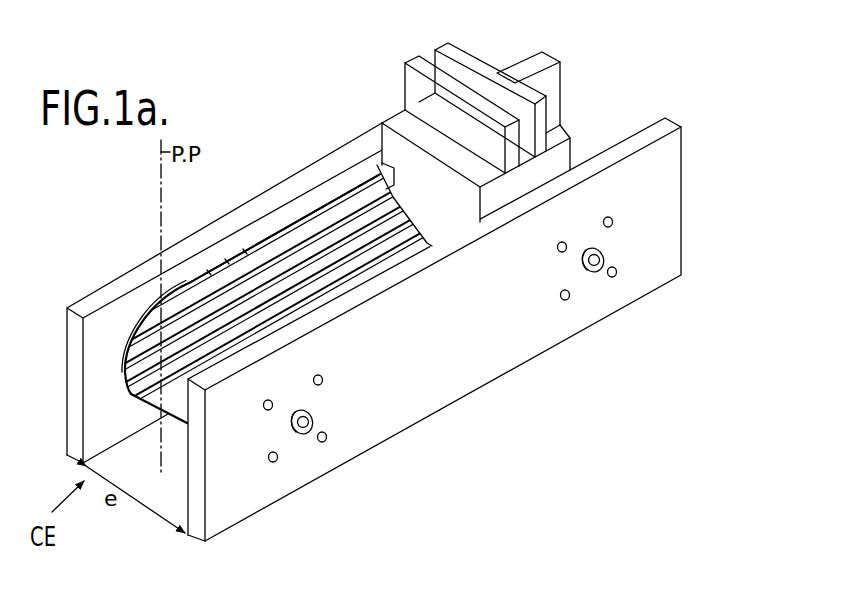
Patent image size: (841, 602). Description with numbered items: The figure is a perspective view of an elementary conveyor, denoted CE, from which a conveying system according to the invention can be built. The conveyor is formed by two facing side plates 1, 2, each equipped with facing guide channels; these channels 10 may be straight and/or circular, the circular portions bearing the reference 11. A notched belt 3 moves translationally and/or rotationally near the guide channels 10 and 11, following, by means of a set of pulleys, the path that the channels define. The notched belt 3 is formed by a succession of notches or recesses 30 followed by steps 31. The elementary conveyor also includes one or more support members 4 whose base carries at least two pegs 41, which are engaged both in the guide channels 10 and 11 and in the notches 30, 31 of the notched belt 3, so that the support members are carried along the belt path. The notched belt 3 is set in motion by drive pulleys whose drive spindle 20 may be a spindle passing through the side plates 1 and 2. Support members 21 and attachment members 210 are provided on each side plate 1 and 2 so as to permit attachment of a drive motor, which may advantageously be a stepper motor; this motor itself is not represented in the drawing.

The side plate 1 is at (103, 297).
The side plate 2 is at (433, 368).
The notched belt 3 is at (150, 368).
The support member 4 is at (458, 62).
The guide channel 10 is at (166, 293).
The circular guide channel 11 is at (125, 355).
The drive spindle 20 is at (310, 432).
The support member 21 is at (296, 434).
The notch 30 is at (303, 230).
The step 31 is at (343, 215).
The peg 41 is at (385, 178).
The attachment member 210 is at (324, 386).